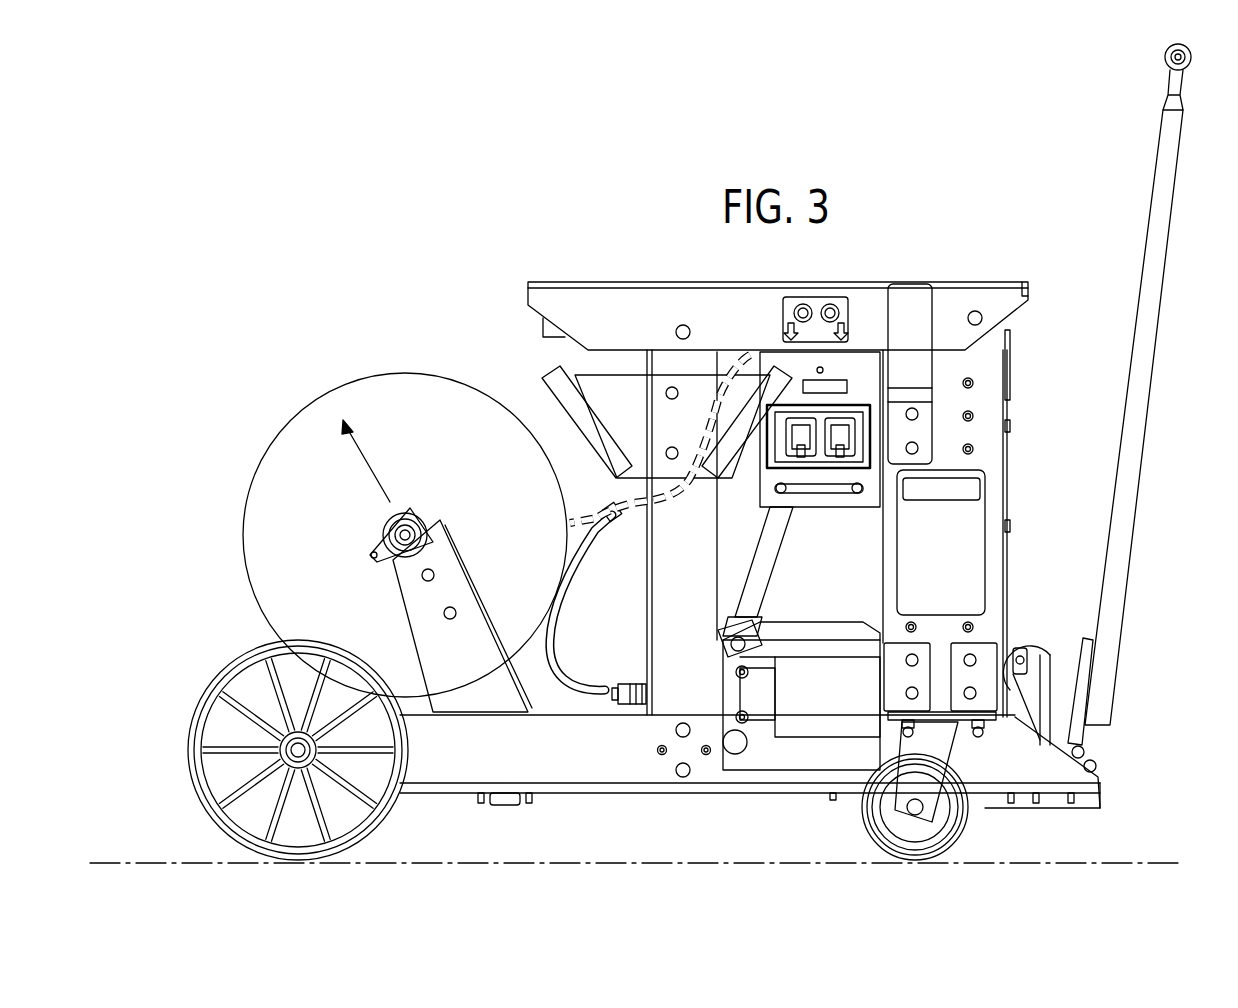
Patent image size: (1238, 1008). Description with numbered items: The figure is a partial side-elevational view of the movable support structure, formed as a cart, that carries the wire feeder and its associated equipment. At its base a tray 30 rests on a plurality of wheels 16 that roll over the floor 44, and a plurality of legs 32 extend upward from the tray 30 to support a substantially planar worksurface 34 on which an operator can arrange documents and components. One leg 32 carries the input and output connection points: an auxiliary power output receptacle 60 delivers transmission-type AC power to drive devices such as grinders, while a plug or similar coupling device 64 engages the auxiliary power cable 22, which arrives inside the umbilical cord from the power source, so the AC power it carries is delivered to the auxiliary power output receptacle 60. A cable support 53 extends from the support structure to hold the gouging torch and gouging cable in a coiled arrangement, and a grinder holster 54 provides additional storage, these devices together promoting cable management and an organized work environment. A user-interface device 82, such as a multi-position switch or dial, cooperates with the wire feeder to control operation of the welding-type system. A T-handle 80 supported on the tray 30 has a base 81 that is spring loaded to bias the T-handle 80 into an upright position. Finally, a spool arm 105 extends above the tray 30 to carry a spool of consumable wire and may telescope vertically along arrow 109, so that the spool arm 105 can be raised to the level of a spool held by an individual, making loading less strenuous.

The wheels 16 is at (228, 672).
The auxiliary power cable 22 is at (580, 518).
The tray 30 is at (1100, 778).
The legs 32 is at (1010, 440).
The worksurface 34 is at (858, 284).
The floor 44 is at (503, 863).
The cable support 53 is at (925, 346).
The grinder holster 54 is at (562, 401).
The auxiliary power output receptacle 60 is at (848, 322).
The coupling device 64 is at (620, 530).
The T-handle 80 is at (1149, 384).
The base 81 is at (1098, 758).
The user-interface device 82 is at (1010, 365).
The spool arm 105 is at (427, 522).
The arrow 109 is at (378, 468).